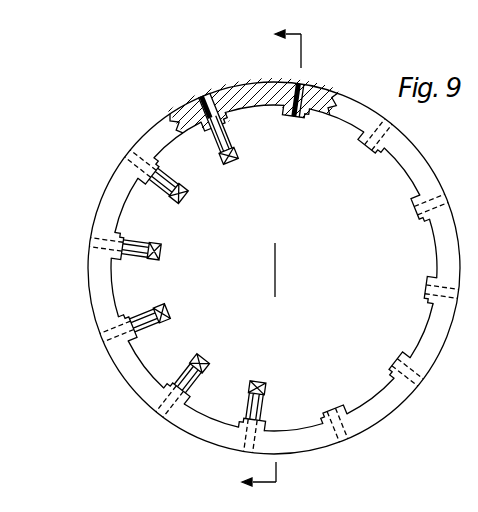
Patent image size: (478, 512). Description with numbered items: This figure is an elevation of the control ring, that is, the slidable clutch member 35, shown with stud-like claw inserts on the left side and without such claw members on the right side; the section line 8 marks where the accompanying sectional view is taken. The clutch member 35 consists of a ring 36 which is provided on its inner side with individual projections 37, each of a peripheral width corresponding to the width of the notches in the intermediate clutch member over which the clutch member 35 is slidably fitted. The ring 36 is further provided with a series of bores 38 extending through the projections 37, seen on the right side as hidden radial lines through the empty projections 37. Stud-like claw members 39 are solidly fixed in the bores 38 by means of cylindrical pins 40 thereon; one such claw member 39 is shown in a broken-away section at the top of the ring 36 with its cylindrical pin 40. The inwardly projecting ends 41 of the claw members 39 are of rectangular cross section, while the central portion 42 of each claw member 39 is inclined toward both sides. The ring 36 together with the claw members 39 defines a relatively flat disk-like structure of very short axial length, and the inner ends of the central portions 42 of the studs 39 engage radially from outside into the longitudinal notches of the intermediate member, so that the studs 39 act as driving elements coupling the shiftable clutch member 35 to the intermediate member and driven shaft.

The section line 8- 8 is at (274, 259).
The slidable clutch member 35 is at (88, 271).
The ring 36 is at (407, 147).
The projections 37 is at (205, 125).
The bores 38 is at (197, 104).
The stud-like claw members 39 is at (237, 151).
The cylindrical pins 40 is at (204, 96).
The inwardly projecting ends 41 is at (224, 160).
The central portion 42 is at (227, 135).